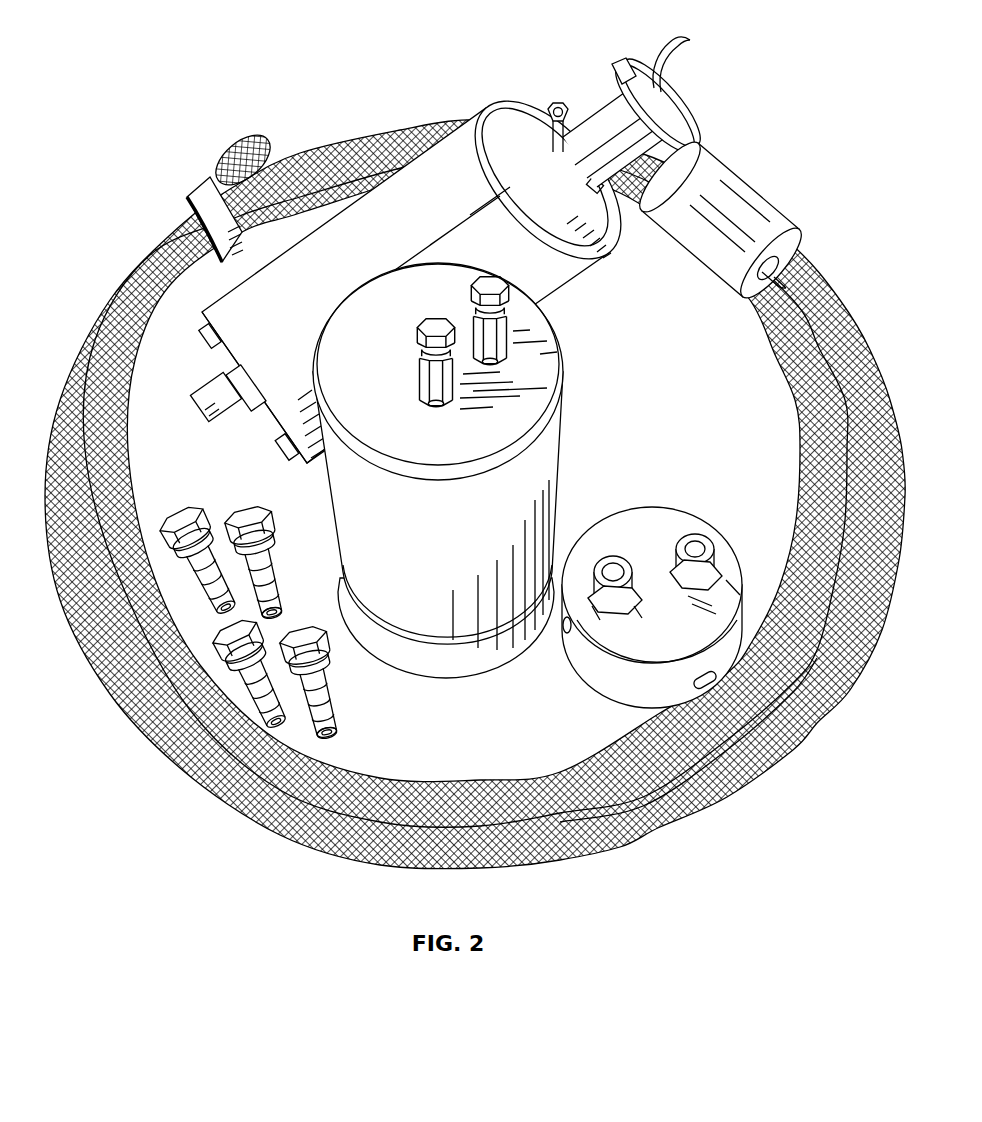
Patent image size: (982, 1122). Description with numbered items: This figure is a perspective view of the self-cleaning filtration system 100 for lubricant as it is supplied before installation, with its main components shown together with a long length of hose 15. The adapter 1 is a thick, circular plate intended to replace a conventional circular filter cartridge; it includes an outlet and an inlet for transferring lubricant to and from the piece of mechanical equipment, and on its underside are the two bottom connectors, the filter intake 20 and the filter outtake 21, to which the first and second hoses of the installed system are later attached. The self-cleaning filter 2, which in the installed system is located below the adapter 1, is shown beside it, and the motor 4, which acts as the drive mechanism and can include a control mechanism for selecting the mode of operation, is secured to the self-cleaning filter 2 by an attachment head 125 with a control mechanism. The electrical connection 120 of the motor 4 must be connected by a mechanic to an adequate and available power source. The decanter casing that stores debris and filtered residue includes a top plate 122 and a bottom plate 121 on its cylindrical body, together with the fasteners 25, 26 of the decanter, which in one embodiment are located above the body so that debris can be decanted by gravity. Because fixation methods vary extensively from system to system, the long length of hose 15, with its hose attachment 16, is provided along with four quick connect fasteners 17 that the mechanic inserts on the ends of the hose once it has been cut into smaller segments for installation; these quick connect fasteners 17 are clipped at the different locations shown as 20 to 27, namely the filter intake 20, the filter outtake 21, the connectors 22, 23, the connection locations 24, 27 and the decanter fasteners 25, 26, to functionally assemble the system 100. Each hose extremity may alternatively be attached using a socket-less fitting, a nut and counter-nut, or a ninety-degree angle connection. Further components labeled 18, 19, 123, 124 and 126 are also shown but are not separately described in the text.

The self-cleaning filtration system 100 is at (140, 74).
The adapter 1 is at (648, 507).
The self-cleaning filter 2 is at (558, 490).
The motor 4 is at (738, 182).
The hose 15 is at (835, 292).
The hose attachment 16 is at (200, 190).
The quick connect fasteners 17 is at (272, 520).
The fitting nut 18 is at (232, 512).
The fitting tip 19 is at (286, 608).
The filter intake 20 is at (700, 540).
The filter outtake 21 is at (600, 556).
The connector 22 is at (282, 456).
The connector 23 is at (204, 412).
The connection location 24 is at (204, 341).
The decanter fastener 25 is at (545, 305).
The decanter fastener 26 is at (415, 335).
The connection location 27 is at (554, 106).
The electrical connection 120 is at (690, 66).
The bottom plate 121 is at (570, 378).
The top plate 122 is at (455, 680).
The housing block 123 is at (235, 313).
The valve body 124 is at (500, 108).
The attachment head 125 is at (620, 70).
The hose connector 126 is at (792, 262).